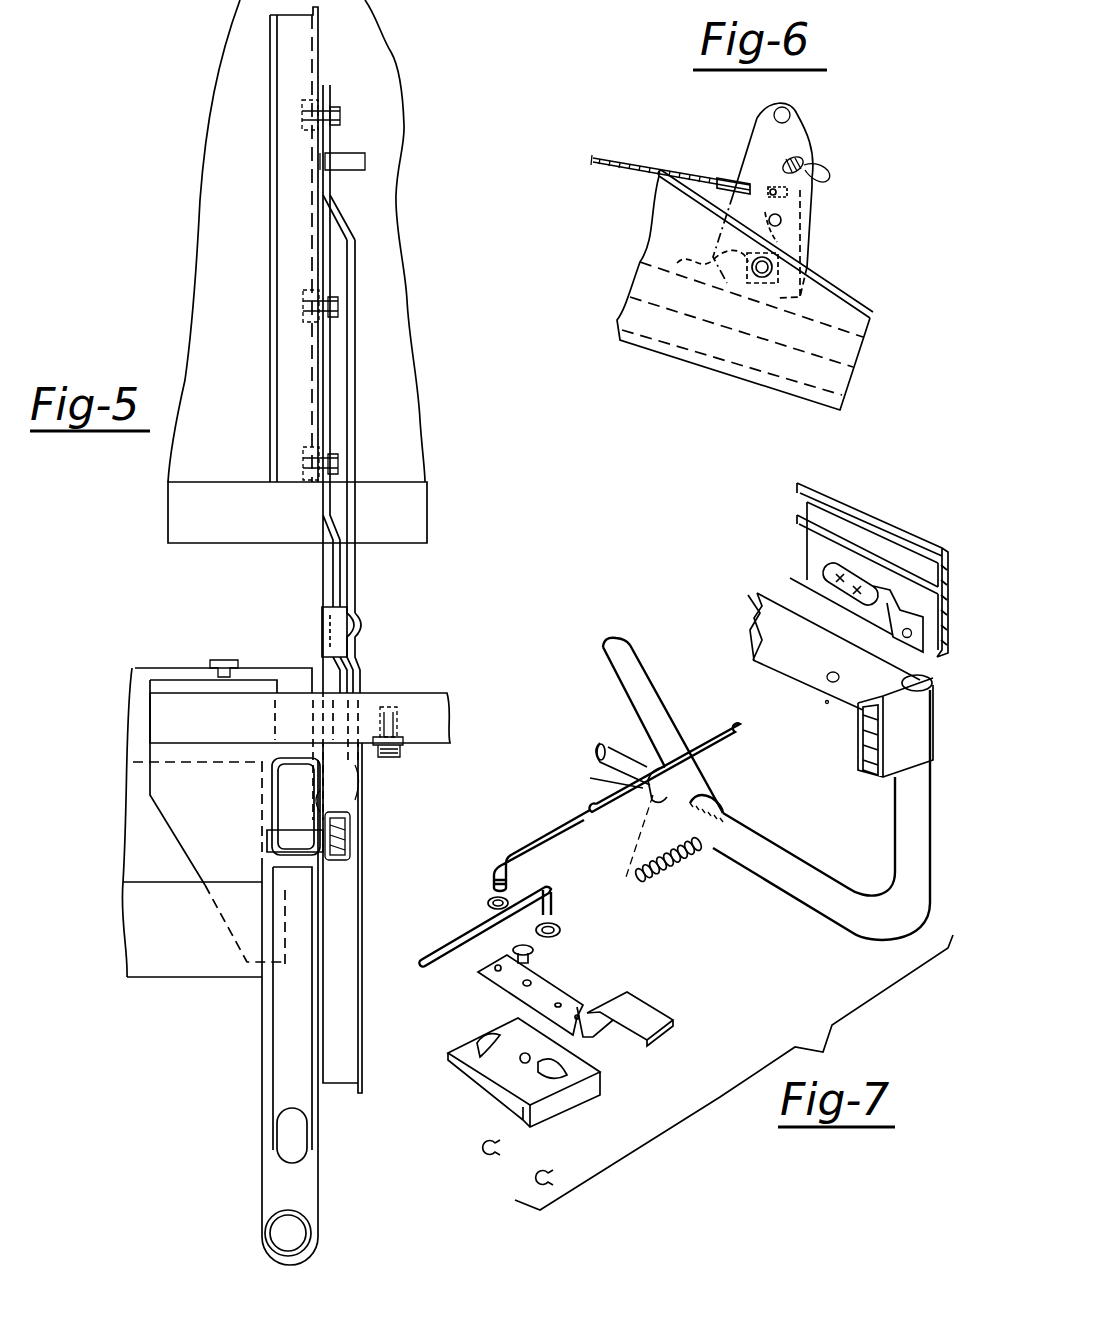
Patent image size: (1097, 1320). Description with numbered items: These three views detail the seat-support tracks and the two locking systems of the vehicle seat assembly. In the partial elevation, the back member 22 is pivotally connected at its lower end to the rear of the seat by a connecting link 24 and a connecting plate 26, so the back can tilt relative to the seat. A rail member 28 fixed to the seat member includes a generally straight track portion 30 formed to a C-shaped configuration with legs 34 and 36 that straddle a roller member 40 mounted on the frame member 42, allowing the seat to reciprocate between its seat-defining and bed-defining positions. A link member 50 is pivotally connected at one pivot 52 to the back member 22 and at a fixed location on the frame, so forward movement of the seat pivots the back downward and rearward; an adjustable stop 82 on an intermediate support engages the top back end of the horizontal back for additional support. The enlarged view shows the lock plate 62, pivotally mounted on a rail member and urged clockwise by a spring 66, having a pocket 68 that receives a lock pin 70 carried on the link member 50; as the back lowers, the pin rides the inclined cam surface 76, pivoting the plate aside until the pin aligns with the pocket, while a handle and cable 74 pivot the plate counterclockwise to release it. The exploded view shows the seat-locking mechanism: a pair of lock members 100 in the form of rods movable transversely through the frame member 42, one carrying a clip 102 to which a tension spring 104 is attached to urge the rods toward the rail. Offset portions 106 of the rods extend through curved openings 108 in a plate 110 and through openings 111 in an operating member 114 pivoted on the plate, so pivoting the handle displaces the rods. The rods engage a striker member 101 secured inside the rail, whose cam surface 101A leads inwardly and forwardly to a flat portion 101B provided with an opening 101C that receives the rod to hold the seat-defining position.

In FIG. 5, the back member 22 is at (405, 345).
In FIG. 5, the connecting link 24 is at (330, 390).
In FIG. 5, the connecting plate 26 is at (360, 662).
In FIG. 5, the rail member 28 is at (362, 850).
In FIG. 7, the rail member 28 is at (825, 472).
In FIG. 7, the track portion 30 is at (850, 500).
In FIG. 5, the leg 34 is at (332, 877).
In FIG. 5, the leg 36 is at (350, 790).
In FIG. 5, the roller member 40 is at (355, 820).
In FIG. 5, the frame member 42 is at (275, 792).
In FIG. 7, the frame member 42 is at (820, 703).
In FIG. 5, the link member 50 is at (355, 450).
In FIG. 5, the pivot 52 is at (348, 92).
In FIG. 6, the lock plate 62 is at (815, 223).
In FIG. 6, the spring 66 is at (815, 250).
In FIG. 6, the pocket 68 is at (813, 165).
In FIG. 5, the lock pin 70 is at (352, 198).
In FIG. 6, the lock pin 70 is at (826, 176).
In FIG. 6, the cable 74 is at (613, 160).
In FIG. 6, the inclined cam surface 76 is at (786, 152).
In FIG. 5, the adjustable stop 82 is at (226, 658).
In FIG. 7, the lock member 100 is at (548, 850).
In FIG. 7, the striker member 101 is at (927, 627).
In FIG. 7, the cam surface 101A is at (823, 577).
In FIG. 7, the flat portion 101B is at (900, 617).
In FIG. 7, the opening 101C is at (900, 612).
In FIG. 7, the clip 102 is at (648, 770).
In FIG. 7, the tension spring 104 is at (653, 895).
In FIG. 7, the offset portion 106 is at (490, 877).
In FIG. 7, the curved opening 108 is at (478, 1053).
In FIG. 7, the plate 110 is at (590, 1108).
In FIG. 7, the opening 111 is at (498, 987).
In FIG. 7, the operating member 114 is at (630, 1000).